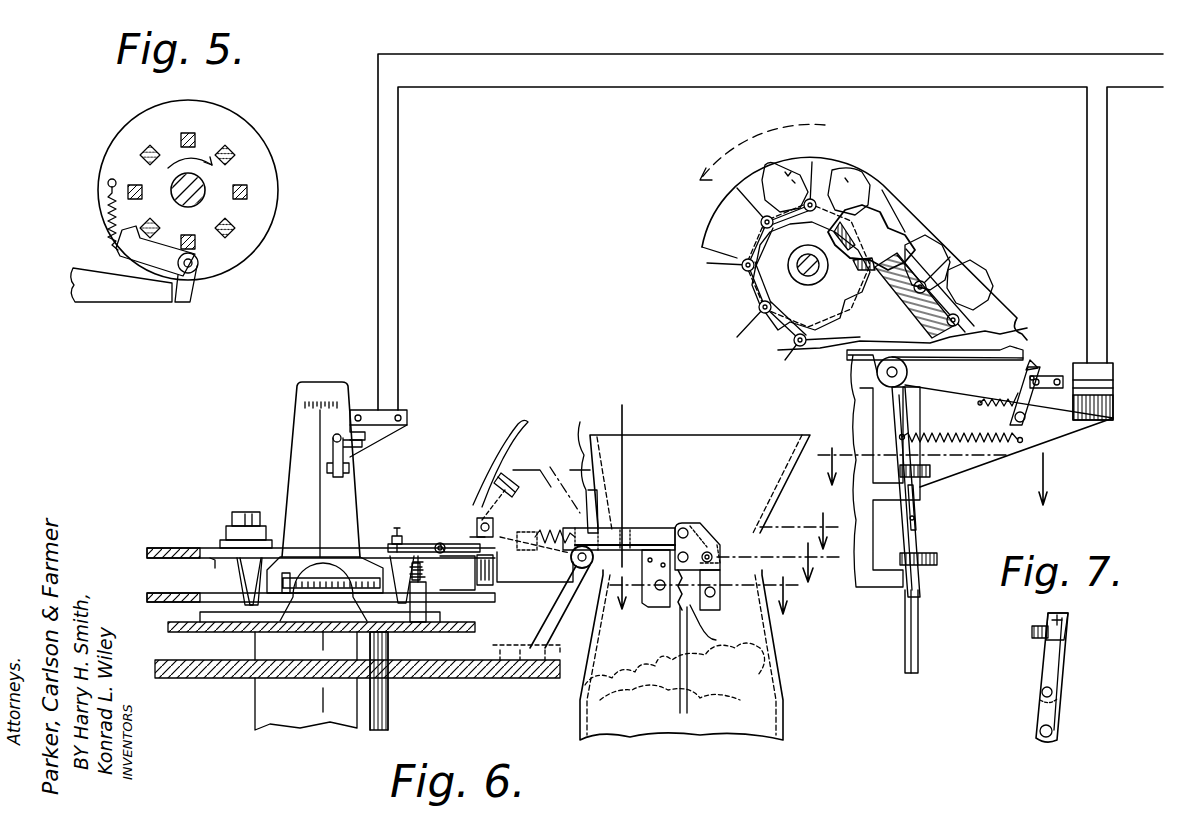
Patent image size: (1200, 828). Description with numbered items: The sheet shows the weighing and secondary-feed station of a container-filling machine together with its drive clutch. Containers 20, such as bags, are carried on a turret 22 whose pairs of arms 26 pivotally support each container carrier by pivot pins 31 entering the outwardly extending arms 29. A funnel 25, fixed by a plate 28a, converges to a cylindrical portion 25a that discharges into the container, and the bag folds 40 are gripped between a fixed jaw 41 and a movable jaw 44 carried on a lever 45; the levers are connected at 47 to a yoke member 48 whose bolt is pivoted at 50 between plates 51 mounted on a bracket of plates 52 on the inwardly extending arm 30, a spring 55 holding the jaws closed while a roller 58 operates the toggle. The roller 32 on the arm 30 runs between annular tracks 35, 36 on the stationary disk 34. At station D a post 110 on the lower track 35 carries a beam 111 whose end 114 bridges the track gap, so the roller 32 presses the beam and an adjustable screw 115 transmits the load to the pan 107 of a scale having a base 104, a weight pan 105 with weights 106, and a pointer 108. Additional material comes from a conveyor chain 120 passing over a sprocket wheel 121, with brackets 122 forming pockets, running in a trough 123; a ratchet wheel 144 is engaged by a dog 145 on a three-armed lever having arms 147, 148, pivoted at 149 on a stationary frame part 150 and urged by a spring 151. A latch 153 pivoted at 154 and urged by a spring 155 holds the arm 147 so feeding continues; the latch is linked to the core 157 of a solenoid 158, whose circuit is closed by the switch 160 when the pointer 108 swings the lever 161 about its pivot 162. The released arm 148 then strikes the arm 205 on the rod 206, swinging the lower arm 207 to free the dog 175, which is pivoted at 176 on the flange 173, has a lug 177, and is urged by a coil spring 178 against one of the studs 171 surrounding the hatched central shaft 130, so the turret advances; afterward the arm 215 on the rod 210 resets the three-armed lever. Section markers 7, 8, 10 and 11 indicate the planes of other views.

In FIG. 5, the studs 171 is at (244, 182).
In FIG. 5, the coil spring 178 is at (108, 195).
In FIG. 5, the shaft 130 is at (205, 200).
In FIG. 5, the flange 173 is at (255, 244).
In FIG. 5, the dog or latch 175 is at (135, 258).
In FIG. 5, the pivot 176 is at (198, 263).
In FIG. 5, the arm or lug 177 is at (192, 298).
In FIG. 5, the lower arm 207 is at (148, 298).
In FIG. 6, the switch or contact device 160 is at (402, 415).
In FIG. 6, the lever 161 is at (358, 447).
In FIG. 6, the pointer or arm 108 is at (316, 430).
In FIG. 6, the pivot 162 is at (332, 440).
In FIG. 6, the upper annular track 36 is at (186, 528).
In FIG. 6, the lower annular track 35 is at (186, 580).
In FIG. 6, the stationary disk or support 34 is at (196, 630).
In FIG. 6, the turret or rotary table 22 is at (178, 680).
In FIG. 6, the scale base 104 is at (312, 616).
In FIG. 6, the post or standard 110 is at (433, 615).
In FIG. 6, the platform or pan 105 is at (200, 546).
In FIG. 6, the weights 106 is at (258, 527).
In FIG. 6, the adjustable screw 115 is at (398, 528).
In FIG. 6, the platform or pan 107 is at (392, 552).
In FIG. 6, the lever or beam 111 is at (428, 520).
In FIG. 6, the inwardly extending arm 30 is at (528, 580).
In FIG. 6, the roller 32 is at (490, 588).
In FIG. 6, the end of beam 114 is at (480, 520).
In FIG. 6, the section line 8 is at (500, 470).
In FIG. 6, the roller 58 is at (522, 442).
In FIG. 6, the pair of plates 51 is at (512, 455).
In FIG. 6, the spring 55 is at (553, 460).
In FIG. 6, the pivot 50 is at (536, 532).
In FIG. 6, the bracket plates 52 is at (521, 543).
In FIG. 6, the arm or plate 28a is at (586, 468).
In FIG. 6, the section line 10 is at (721, 497).
In FIG. 6, the section line 11 is at (707, 609).
In FIG. 6, the chute or funnel 25 is at (700, 442).
In FIG. 6, the outwardly extending arms 29 is at (630, 540).
In FIG. 6, the pivot pins 31 is at (587, 570).
In FIG. 6, the pairs of arms 26 is at (572, 672).
In FIG. 6, the yoke member 48 is at (658, 520).
In FIG. 6, the pivotal connection 47 is at (690, 520).
In FIG. 6, the lever 45 is at (710, 545).
In FIG. 6, the fixed jaw 41 is at (676, 610).
In FIG. 6, the movable jaw 44 is at (722, 610).
In FIG. 6, the folds 40 is at (690, 700).
In FIG. 6, the containers 20 is at (790, 720).
In FIG. 6, the cylindrical portion 25a is at (675, 671).
In FIG. 6, the section line 7 is at (940, 476).
In FIG. 6, the station D is at (610, 297).
In FIG. 6, the conveyor chain 120 is at (980, 315).
In FIG. 6, the sprocket wheel 121 is at (778, 272).
In FIG. 6, the ratchet wheel 144 is at (845, 210).
In FIG. 6, the dog 145 is at (872, 228).
In FIG. 6, the trough 123 is at (935, 235).
In FIG. 6, the brackets 122 is at (968, 268).
In FIG. 6, the arm 147 is at (990, 350).
In FIG. 6, the latch 153 is at (1050, 370).
In FIG. 6, the pivot 149 is at (885, 376).
In FIG. 6, the arm 148 is at (870, 405).
In FIG. 7, the arm 148 is at (1030, 630).
In FIG. 6, the stationary part 150 is at (855, 425).
In FIG. 6, the spring 155 is at (990, 410).
In FIG. 6, the solenoid or electromagnet 158 is at (1113, 368).
In FIG. 6, the core 157 is at (1113, 386).
In FIG. 6, the pivot 154 is at (1022, 425).
In FIG. 6, the spring 151 is at (985, 462).
In FIG. 6, the laterally extending arm 215 is at (930, 480).
In FIG. 7, the laterally extending arm 215 is at (1062, 648).
In FIG. 6, the upright rod or shaft 210 is at (915, 525).
In FIG. 7, the upright rod or shaft 210 is at (1053, 732).
In FIG. 6, the arm 205 is at (938, 565).
In FIG. 7, the arm 205 is at (1070, 617).
In FIG. 6, the shaft or rod 206 is at (920, 658).
In FIG. 7, the shaft or rod 206 is at (1055, 689).